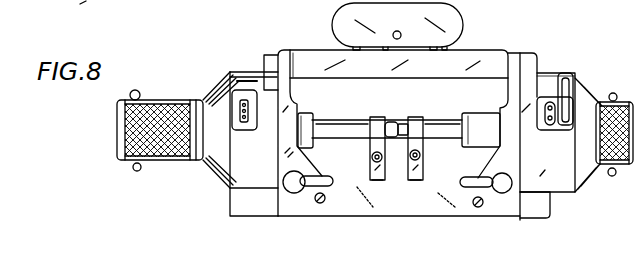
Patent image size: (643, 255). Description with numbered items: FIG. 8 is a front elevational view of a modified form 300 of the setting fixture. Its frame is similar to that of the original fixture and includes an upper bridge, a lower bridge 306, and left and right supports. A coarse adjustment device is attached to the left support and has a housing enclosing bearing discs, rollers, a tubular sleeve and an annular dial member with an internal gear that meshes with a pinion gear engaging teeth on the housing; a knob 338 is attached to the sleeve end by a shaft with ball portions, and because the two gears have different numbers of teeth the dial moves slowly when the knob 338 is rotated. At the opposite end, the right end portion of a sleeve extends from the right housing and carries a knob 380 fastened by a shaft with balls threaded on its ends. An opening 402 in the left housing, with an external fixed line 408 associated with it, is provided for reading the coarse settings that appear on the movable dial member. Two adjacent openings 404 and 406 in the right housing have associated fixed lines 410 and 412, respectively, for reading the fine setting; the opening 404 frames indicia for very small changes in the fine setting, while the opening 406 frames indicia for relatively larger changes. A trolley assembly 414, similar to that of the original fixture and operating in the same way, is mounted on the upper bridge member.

The modified form of the fixture 300 is at (221, 68).
The lower bridge 306 is at (98, 7).
The knob 338 is at (163, 110).
The knob 380 is at (615, 101).
The opening 402 is at (245, 125).
The opening 404 is at (555, 130).
The opening 406 is at (567, 75).
The external fixed line 408 is at (235, 115).
The fixed line 410 is at (537, 106).
The fixed line 412 is at (574, 108).
The trolley assembly 414 is at (331, 22).